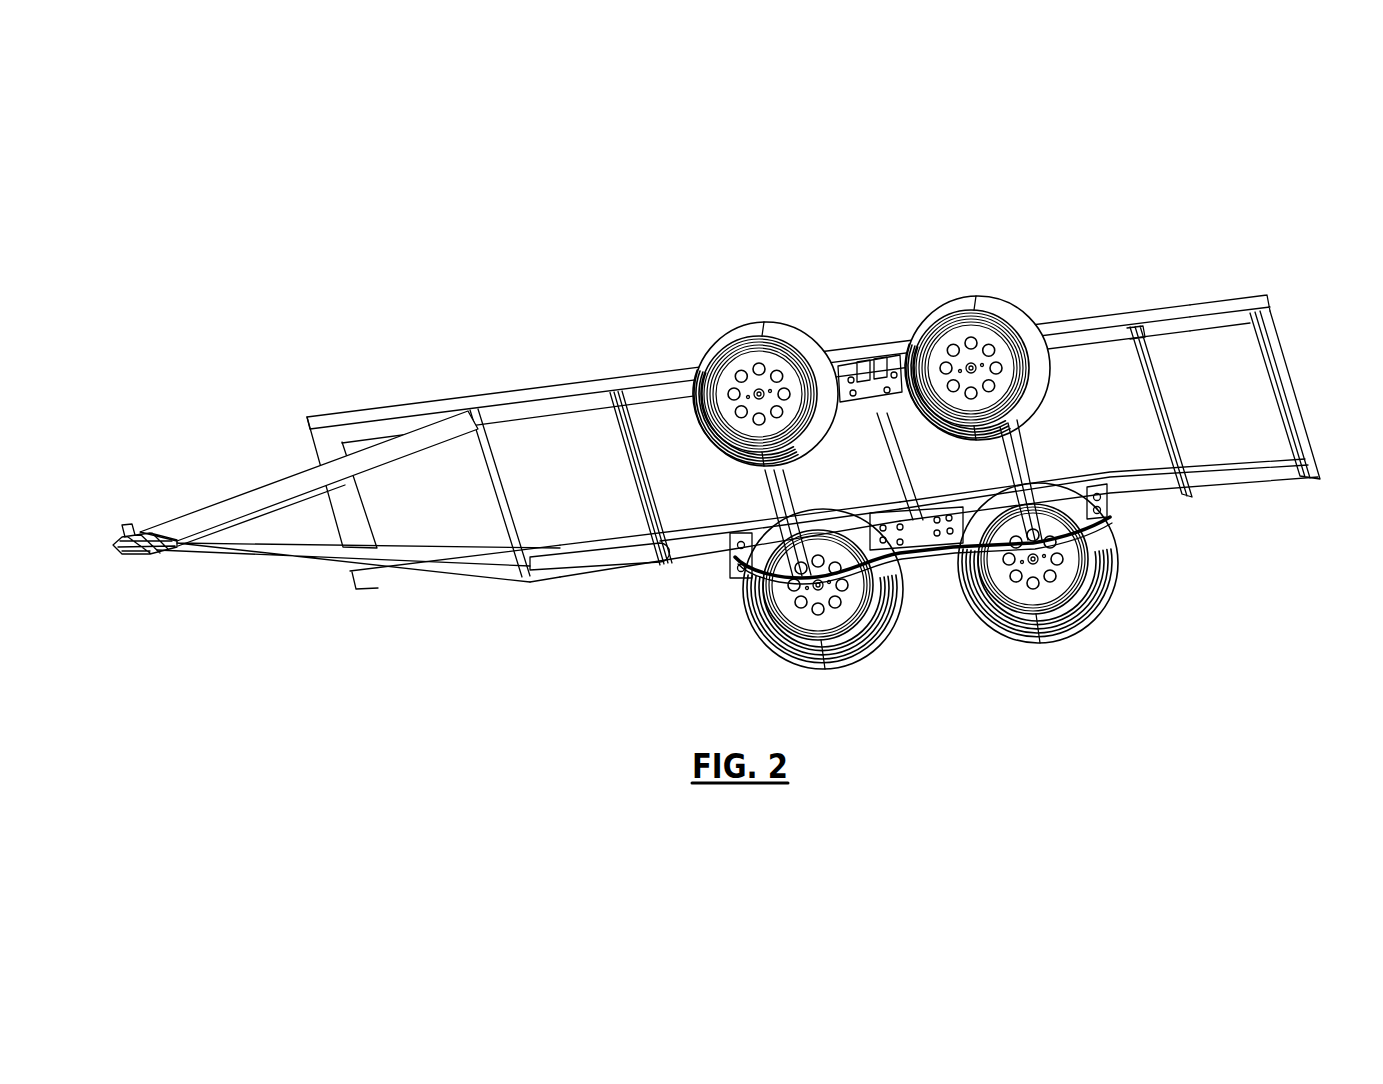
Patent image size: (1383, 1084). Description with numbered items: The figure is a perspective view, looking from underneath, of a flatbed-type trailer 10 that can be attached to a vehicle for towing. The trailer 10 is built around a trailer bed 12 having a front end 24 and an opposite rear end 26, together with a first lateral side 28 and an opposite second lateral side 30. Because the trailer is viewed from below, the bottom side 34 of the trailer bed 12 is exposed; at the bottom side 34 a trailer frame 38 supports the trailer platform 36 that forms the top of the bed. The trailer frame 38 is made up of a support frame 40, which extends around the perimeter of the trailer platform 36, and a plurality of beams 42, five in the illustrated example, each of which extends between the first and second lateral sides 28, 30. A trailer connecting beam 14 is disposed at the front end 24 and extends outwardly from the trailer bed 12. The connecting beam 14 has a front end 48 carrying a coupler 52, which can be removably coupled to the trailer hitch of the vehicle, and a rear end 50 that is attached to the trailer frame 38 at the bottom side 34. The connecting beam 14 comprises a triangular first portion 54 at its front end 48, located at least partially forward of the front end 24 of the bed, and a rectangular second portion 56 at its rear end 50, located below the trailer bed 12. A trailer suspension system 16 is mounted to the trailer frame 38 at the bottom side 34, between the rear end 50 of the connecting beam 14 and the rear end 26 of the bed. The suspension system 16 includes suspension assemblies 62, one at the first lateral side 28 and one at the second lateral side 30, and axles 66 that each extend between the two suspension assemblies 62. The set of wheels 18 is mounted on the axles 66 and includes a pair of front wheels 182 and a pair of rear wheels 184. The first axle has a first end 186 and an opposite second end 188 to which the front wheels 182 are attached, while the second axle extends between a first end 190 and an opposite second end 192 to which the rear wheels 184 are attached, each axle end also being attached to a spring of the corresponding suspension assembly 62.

The trailer 10 is at (225, 286).
The trailer bed 12 is at (460, 400).
The trailer connecting beam 14 is at (352, 526).
The trailer suspension system 16 is at (938, 460).
The set of wheels 18 is at (1006, 292).
The front end 24 is at (344, 583).
The rear end 26 is at (1298, 361).
The first lateral side 28 is at (1140, 316).
The second lateral side 30 is at (688, 553).
The bottom side 34 is at (1280, 483).
The trailer platform 36 is at (1226, 350).
The trailer frame 38 is at (330, 406).
The support frame 40 is at (378, 593).
The plurality of beams 42 is at (1133, 360).
The front end 48 is at (108, 545).
The rear end 50 is at (633, 435).
The coupler 52 is at (131, 558).
The first portion 54 is at (250, 560).
The second portion 56 is at (570, 576).
The suspension assemblies 62 is at (853, 361).
The axles 66 is at (803, 500).
The front wheels 182 is at (826, 670).
The rear wheels 184 is at (1040, 648).
The first end 186 is at (757, 474).
The second end 188 is at (772, 531).
The first end 190 is at (990, 450).
The second end 192 is at (997, 511).